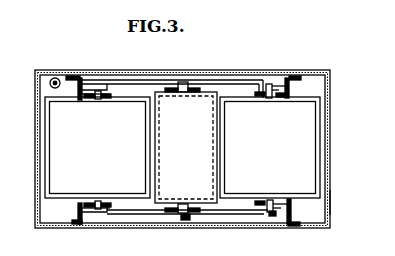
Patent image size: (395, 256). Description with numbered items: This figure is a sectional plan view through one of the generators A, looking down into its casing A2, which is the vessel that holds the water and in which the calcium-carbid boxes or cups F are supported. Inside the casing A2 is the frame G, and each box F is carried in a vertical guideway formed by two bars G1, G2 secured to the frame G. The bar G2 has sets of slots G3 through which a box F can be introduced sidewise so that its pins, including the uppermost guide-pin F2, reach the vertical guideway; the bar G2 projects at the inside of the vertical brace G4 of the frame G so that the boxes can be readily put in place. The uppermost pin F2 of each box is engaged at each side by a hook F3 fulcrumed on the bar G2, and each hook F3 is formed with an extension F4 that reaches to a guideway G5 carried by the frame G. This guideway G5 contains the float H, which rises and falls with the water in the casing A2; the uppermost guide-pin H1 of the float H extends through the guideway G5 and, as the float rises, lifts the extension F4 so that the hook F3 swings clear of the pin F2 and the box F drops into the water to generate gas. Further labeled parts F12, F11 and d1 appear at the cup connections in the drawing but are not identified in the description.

The generator A is at (262, 70).
The casing A2 is at (332, 203).
The boxes or cups F is at (182, 147).
The float H is at (186, 147).
The extension F4 is at (137, 80).
The vertical brace G4 is at (71, 77).
The hook F3 is at (100, 83).
The bar G2 is at (86, 99).
The guide-pin F2 is at (98, 99).
The contact pad d1 is at (114, 99).
The bar G1 is at (108, 206).
The frame G is at (77, 226).
The guide-pin H1 is at (185, 93).
The guideway G5 is at (188, 87).
The terminal strip F12 is at (275, 88).
The sets of slots G3 is at (283, 208).
The terminal F11 is at (272, 217).